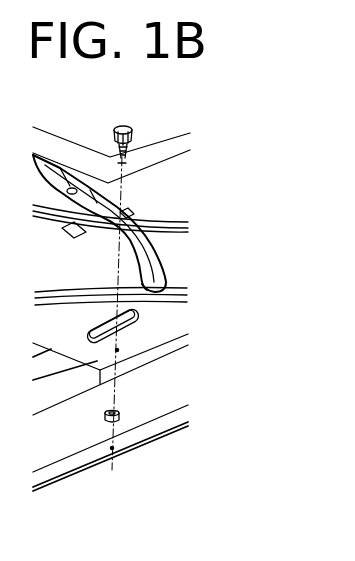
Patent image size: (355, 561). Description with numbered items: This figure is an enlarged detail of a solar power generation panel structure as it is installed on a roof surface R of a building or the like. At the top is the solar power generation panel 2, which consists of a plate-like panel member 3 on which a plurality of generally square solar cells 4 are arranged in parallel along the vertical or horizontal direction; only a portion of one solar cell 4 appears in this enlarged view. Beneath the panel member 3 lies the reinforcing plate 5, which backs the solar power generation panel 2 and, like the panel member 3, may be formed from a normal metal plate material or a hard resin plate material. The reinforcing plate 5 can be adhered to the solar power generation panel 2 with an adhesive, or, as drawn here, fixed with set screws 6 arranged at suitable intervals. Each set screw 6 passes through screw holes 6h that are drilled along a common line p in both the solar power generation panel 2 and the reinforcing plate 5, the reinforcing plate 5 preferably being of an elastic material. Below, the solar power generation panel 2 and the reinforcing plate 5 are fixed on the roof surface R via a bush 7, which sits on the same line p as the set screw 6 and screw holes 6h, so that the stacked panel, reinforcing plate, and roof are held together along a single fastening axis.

The solar power generation panel 2 is at (200, 142).
The panel member 3 is at (32, 155).
The solar cell 4 is at (90, 128).
The reinforcing plate 5 is at (168, 336).
The set screw 6 is at (131, 124).
The screw hole 6h is at (126, 163).
The bush 7 is at (106, 414).
The roof surface R is at (177, 403).
The line p is at (114, 464).